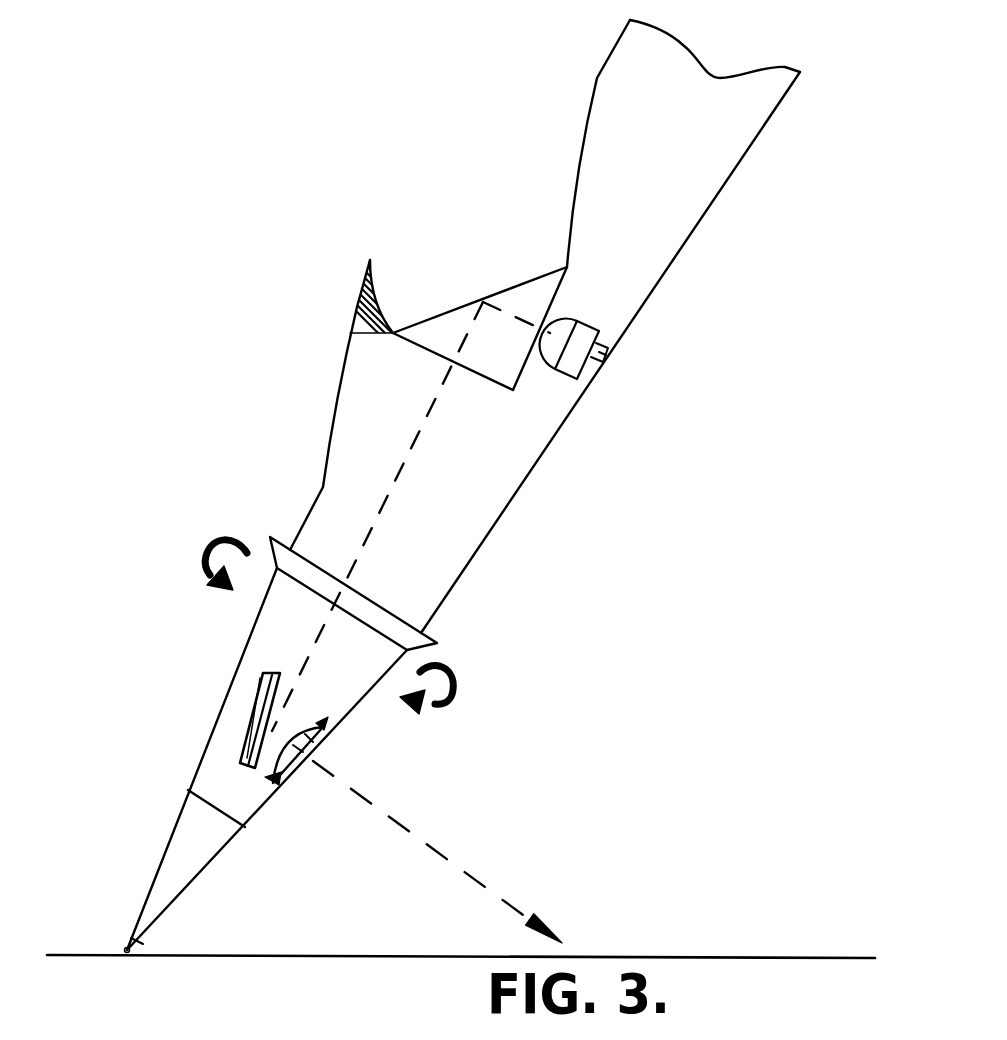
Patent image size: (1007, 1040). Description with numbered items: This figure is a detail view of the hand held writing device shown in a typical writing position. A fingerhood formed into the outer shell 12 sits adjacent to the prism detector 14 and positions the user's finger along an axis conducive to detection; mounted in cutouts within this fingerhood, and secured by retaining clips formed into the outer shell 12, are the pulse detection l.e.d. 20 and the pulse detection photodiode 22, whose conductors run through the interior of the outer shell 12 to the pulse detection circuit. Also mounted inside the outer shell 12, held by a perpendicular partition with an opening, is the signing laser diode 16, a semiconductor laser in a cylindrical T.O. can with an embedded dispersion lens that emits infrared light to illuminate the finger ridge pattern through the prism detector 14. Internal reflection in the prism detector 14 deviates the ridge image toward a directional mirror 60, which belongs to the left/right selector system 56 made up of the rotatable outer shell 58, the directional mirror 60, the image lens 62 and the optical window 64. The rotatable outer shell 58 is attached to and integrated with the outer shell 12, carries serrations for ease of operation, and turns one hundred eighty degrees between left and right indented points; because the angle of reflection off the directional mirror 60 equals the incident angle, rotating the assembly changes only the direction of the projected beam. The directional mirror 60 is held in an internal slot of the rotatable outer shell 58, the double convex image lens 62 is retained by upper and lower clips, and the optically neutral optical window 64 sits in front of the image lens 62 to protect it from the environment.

The outer shell 12 is at (680, 253).
The prism detector 14 is at (520, 375).
The signing laser diode 16 is at (607, 360).
The pulse detection l.e.d. 20 is at (350, 310).
The pulse detection photodiode 22 is at (383, 333).
The left/right selector system 56 is at (196, 629).
The rotatable outer shell 58 is at (190, 777).
The directional mirror 60 is at (243, 738).
The image lens 62 is at (327, 737).
The optical window 64 is at (290, 782).